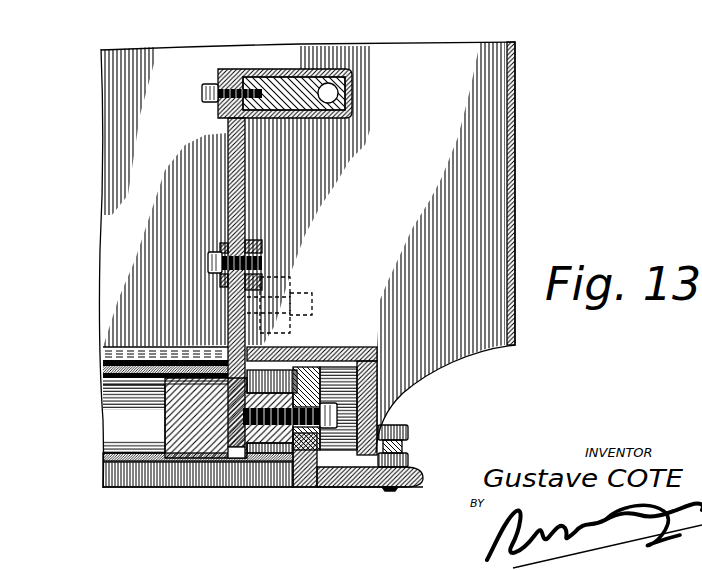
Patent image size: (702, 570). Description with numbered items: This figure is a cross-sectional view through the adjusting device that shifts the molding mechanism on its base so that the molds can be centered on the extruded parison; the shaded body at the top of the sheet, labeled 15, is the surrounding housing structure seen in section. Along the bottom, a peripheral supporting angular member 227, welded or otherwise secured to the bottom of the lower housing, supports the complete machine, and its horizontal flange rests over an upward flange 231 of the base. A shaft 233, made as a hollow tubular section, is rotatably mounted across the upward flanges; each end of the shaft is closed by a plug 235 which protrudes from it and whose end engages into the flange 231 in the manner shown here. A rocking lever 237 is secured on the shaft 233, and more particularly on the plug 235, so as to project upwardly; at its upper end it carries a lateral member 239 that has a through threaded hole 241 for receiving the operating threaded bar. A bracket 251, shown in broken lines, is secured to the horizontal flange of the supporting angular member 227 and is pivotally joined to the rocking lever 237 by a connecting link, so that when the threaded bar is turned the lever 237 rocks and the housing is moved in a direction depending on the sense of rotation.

The housing block 15 is at (307, 244).
The peripheral supporting angular member 227 is at (370, 400).
The upward flange 231 is at (312, 460).
The shaft 233 is at (103, 382).
The plug 235 is at (217, 437).
The rocking lever 237 is at (228, 182).
The lateral member 239 is at (281, 82).
The through threaded hole 241 is at (333, 86).
The bracket 251 is at (277, 290).